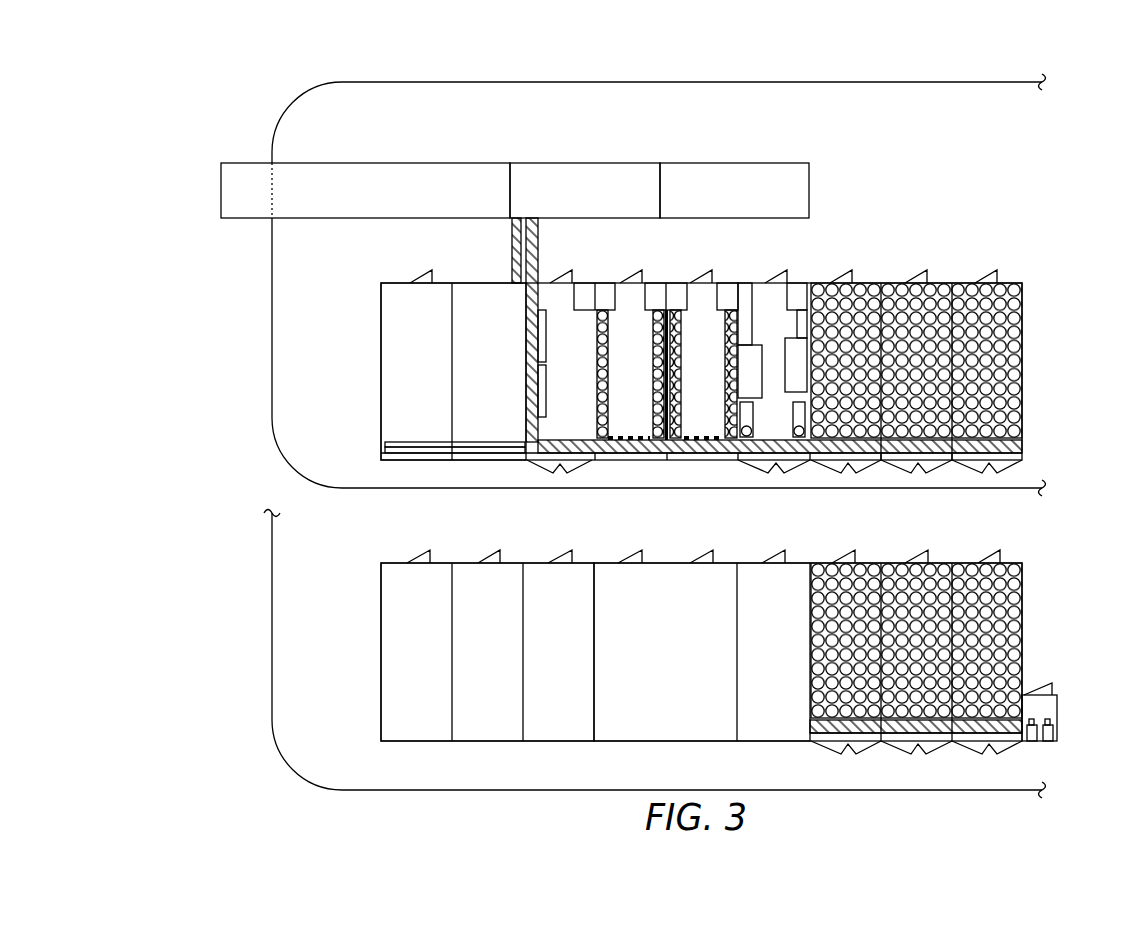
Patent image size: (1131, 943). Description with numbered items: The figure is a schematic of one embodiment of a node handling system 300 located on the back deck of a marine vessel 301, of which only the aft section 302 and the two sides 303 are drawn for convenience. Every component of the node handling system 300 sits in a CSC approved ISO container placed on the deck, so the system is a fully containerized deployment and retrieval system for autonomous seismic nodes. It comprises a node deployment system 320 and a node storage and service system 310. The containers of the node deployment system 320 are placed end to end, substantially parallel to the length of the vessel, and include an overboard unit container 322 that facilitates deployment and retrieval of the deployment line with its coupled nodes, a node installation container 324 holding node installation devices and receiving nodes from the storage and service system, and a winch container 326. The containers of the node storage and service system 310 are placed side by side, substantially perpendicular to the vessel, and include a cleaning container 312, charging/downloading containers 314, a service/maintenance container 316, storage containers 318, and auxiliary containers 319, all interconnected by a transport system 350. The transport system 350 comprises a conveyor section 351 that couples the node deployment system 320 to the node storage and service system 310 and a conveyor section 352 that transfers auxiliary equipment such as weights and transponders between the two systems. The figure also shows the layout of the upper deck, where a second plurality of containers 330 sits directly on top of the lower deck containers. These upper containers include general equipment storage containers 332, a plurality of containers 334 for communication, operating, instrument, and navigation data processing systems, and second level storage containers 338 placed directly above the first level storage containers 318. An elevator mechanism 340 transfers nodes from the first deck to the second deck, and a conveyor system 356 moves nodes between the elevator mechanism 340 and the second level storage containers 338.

The node handling system 300 is at (228, 98).
The vessel 301 is at (313, 115).
The aft section 302 is at (272, 345).
The sides 303 is at (600, 81).
The node storage and service system 310 is at (744, 350).
The cleaning container 312 is at (572, 290).
The charging/downloading containers 314 is at (692, 291).
The service/maintenance container 316 is at (784, 293).
The storage containers 318 is at (962, 290).
The auxiliary containers 319 is at (470, 288).
The node deployment system 320 is at (551, 186).
The overboard unit container 322 is at (350, 203).
The node installation container 324 is at (570, 203).
The winch container 326 is at (716, 203).
The second plurality of containers 330 is at (743, 642).
The general equipment storage containers 332 is at (398, 663).
The data processing containers 334 is at (648, 663).
The second level storage containers 338 is at (985, 578).
The elevator mechanism 340 is at (1064, 725).
The transport system 350 is at (534, 451).
The conveyor section 351 is at (538, 272).
The conveyor section 352 is at (512, 247).
The conveyor system 356 is at (1027, 730).